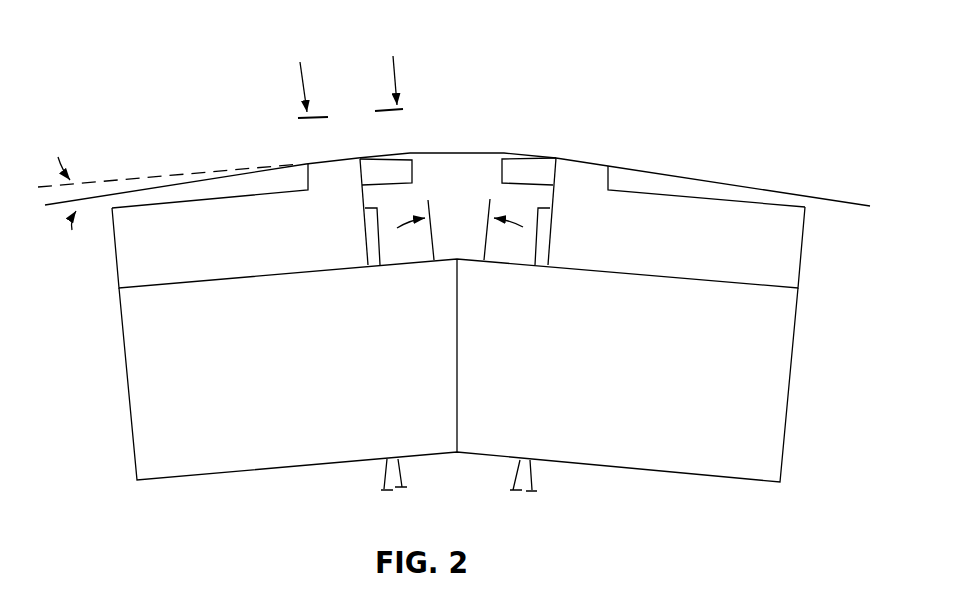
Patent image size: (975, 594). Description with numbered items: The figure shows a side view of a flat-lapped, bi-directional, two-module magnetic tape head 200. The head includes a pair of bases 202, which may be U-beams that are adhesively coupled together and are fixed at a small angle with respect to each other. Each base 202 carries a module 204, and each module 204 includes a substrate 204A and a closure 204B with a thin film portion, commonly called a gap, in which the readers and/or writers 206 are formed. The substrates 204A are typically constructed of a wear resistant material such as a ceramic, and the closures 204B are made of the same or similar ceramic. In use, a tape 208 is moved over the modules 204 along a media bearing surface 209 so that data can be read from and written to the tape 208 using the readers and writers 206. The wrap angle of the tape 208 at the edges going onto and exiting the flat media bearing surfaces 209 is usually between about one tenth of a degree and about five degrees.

The magnetic tape head 200 is at (168, 117).
The base 202 is at (125, 360).
The module 204 is at (115, 255).
The substrate 204A is at (180, 230).
The closure 204B is at (503, 171).
The readers and/or writers 206 is at (363, 151).
The tape 208 is at (713, 181).
The media bearing surface 209 is at (312, 156).